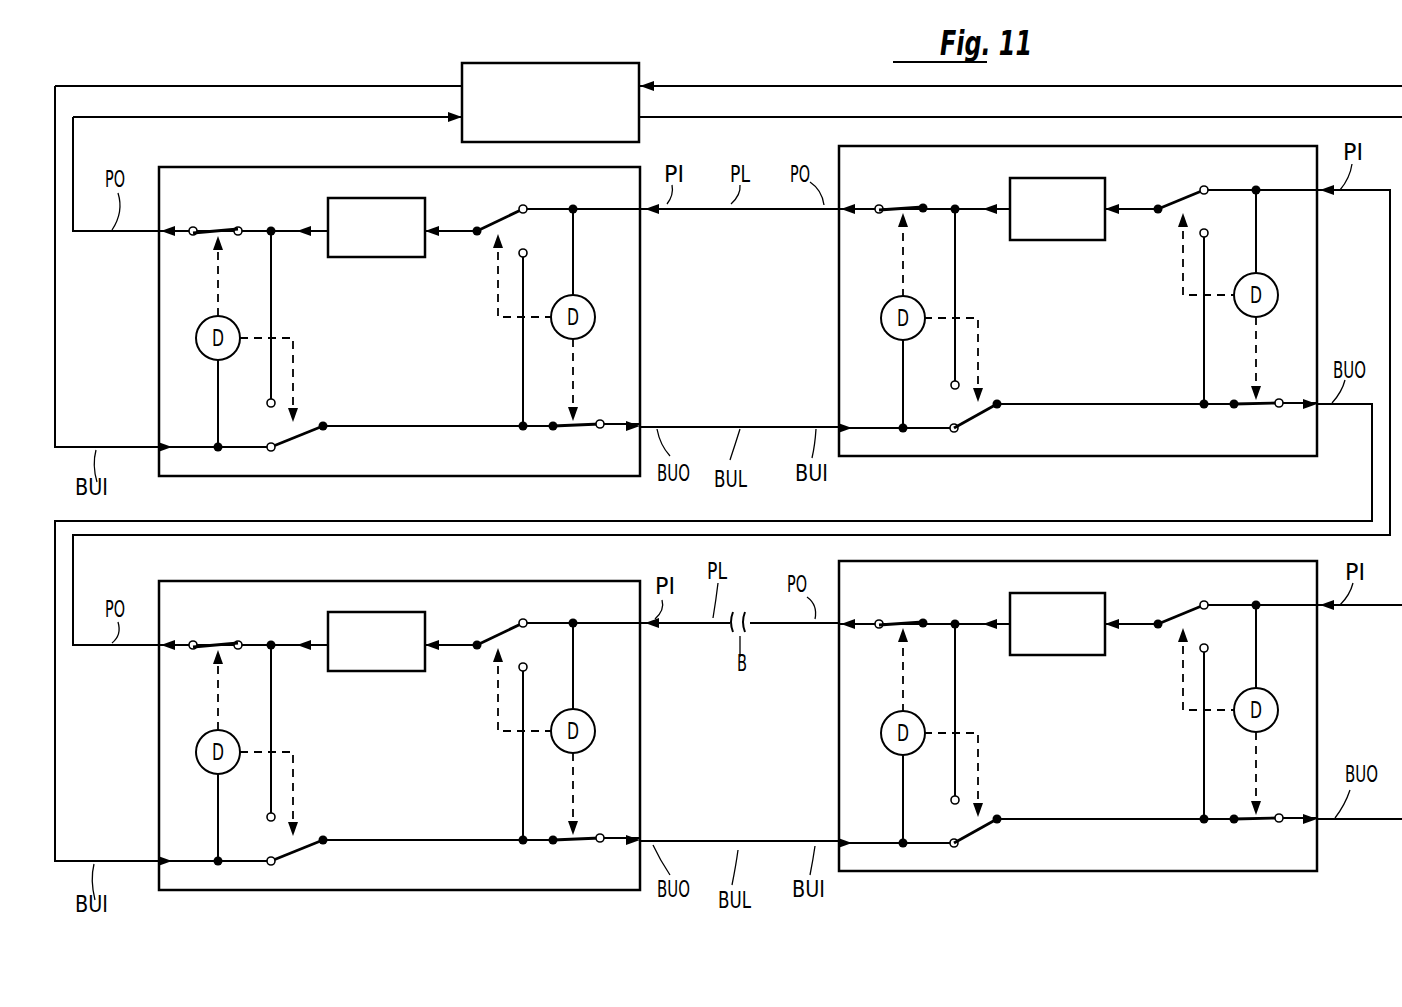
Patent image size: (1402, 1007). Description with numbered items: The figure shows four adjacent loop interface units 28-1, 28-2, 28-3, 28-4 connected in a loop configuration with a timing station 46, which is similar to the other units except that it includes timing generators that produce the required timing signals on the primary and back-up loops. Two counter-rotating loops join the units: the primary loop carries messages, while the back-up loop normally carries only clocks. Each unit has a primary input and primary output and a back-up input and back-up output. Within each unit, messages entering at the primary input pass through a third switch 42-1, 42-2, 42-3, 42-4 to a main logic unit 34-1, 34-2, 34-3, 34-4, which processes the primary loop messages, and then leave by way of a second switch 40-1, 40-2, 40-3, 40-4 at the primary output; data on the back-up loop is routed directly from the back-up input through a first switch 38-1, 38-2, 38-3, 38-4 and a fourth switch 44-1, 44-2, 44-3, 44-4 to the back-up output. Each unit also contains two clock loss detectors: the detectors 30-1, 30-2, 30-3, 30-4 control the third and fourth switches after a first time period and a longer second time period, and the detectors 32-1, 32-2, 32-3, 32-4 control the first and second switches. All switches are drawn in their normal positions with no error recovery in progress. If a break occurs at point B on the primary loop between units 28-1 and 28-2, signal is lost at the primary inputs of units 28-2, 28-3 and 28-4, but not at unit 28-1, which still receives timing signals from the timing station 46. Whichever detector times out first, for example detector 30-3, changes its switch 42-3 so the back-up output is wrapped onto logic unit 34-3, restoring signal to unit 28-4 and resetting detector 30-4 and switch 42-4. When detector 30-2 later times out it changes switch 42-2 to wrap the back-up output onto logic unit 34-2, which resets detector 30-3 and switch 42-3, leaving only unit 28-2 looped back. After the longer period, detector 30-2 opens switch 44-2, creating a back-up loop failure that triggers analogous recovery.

The timing station 46 is at (552, 63).
The loop interface unit 28-1 is at (839, 575).
The loop interface unit 28-2 is at (399, 718).
The loop interface unit 28-3 is at (1055, 289).
The loop interface unit 28-4 is at (293, 166).
The clock loss detector 30-1 is at (1270, 700).
The clock loss detector 30-2 is at (591, 715).
The clock loss detector 30-3 is at (1271, 280).
The clock loss detector 30-4 is at (584, 297).
The clock loss detector 32-1 is at (887, 749).
The clock loss detector 32-2 is at (206, 771).
The clock loss detector 32-3 is at (887, 336).
The clock loss detector 32-4 is at (206, 357).
The main logic unit 34-1 is at (1066, 656).
The main logic unit 34-2 is at (376, 665).
The main logic unit 34-3 is at (1057, 235).
The main logic unit 34-4 is at (382, 258).
The switch S1 38-1 is at (979, 833).
The switch S1 38-2 is at (312, 861).
The switch S1 38-3 is at (993, 424).
The switch S1 38-4 is at (300, 436).
The switch S2 40-1 is at (893, 620).
The switch S2 40-2 is at (216, 623).
The switch S2 40-3 is at (895, 186).
The switch S2 40-4 is at (220, 228).
The switch S3 42-1 is at (1174, 614).
The switch S3 42-2 is at (487, 621).
The switch S3 42-3 is at (1168, 184).
The switch S3 42-4 is at (498, 221).
The switch S4 44-1 is at (1258, 827).
The switch S4 44-2 is at (585, 858).
The switch S4 44-3 is at (1262, 425).
The switch S4 44-4 is at (579, 431).